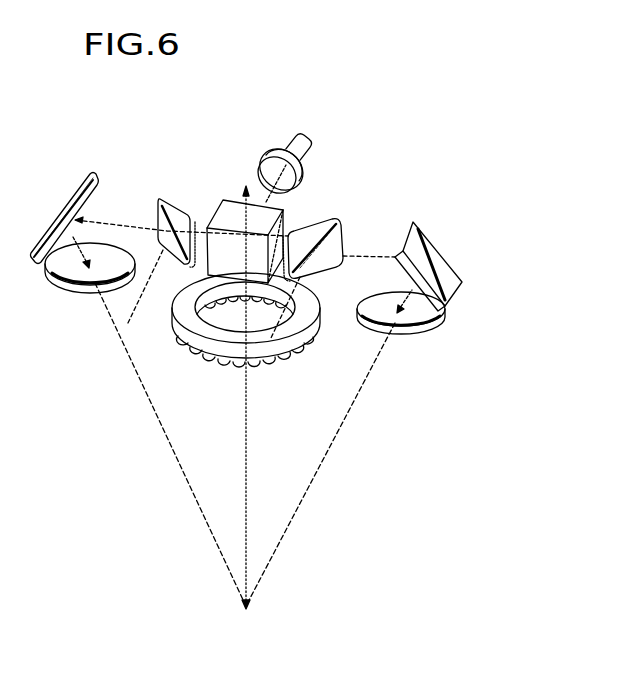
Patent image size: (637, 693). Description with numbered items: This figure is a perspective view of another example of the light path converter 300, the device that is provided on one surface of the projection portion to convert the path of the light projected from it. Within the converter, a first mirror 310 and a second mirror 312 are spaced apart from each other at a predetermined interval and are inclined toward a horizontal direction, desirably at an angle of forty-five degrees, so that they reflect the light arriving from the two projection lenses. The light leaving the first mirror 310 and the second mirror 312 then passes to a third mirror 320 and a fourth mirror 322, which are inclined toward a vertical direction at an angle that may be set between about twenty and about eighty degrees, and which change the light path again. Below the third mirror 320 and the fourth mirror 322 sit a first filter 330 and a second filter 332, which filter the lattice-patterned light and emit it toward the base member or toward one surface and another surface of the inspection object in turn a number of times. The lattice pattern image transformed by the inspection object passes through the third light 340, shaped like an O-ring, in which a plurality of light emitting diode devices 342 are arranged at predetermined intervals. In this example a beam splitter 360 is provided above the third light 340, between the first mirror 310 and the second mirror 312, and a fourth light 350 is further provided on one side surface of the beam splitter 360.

The light path converter 300 is at (277, 93).
The first mirror 310 is at (338, 222).
The second mirror 312 is at (163, 199).
The third mirror 320 is at (416, 222).
The fourth mirror 322 is at (78, 192).
The first filter 330 is at (423, 333).
The second filter 332 is at (70, 297).
The third light 340 is at (173, 322).
The light emitting diode devices 342 is at (207, 358).
The fourth light 350 is at (304, 134).
The beam splitter 360 is at (234, 192).